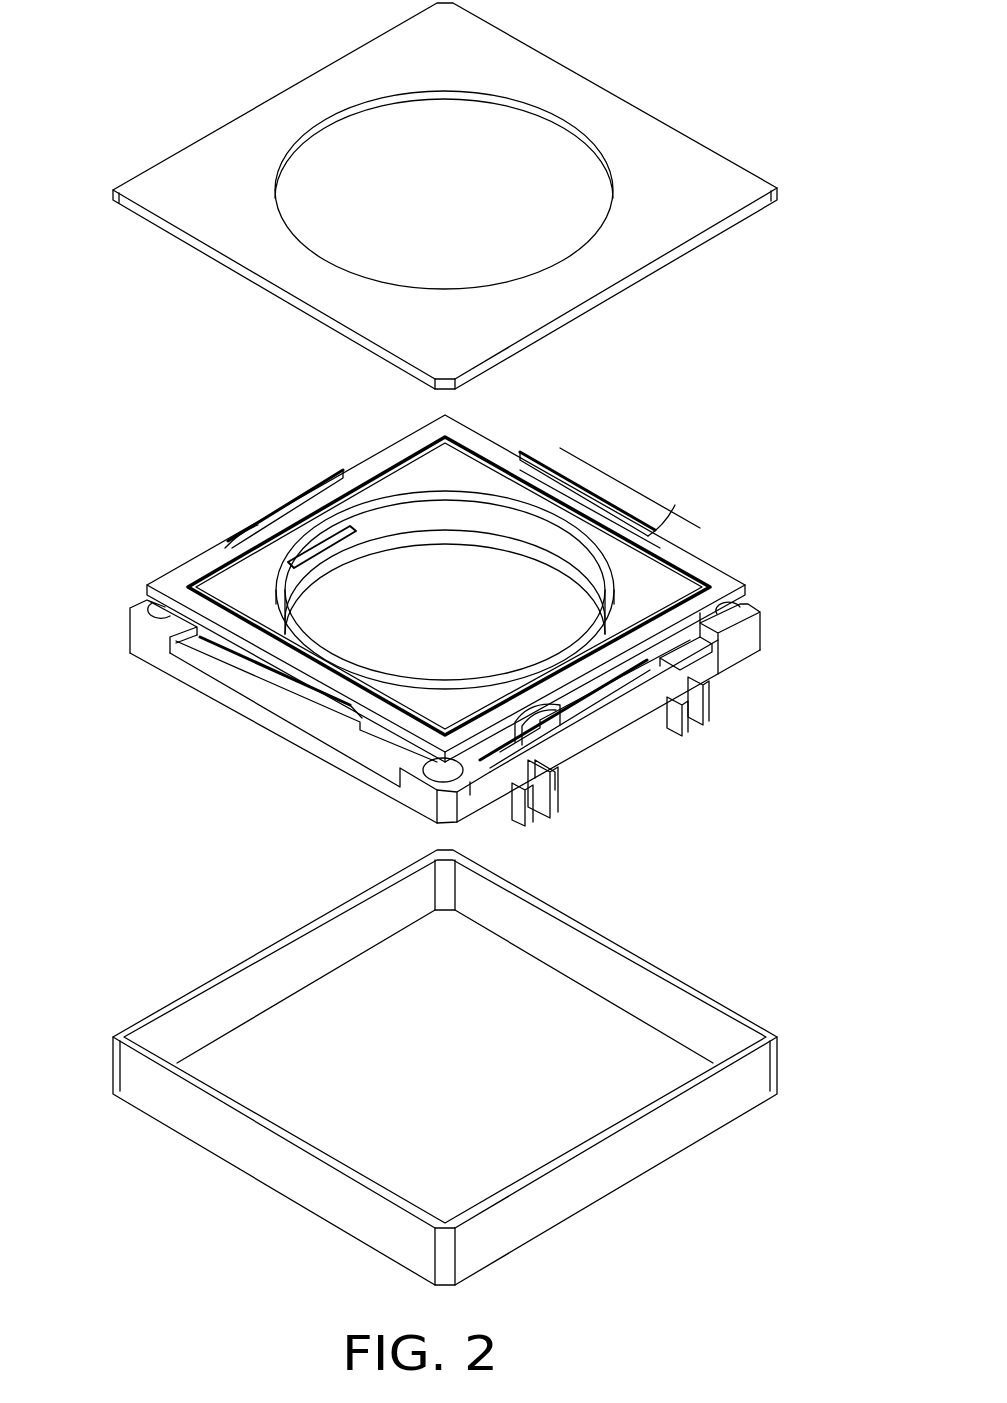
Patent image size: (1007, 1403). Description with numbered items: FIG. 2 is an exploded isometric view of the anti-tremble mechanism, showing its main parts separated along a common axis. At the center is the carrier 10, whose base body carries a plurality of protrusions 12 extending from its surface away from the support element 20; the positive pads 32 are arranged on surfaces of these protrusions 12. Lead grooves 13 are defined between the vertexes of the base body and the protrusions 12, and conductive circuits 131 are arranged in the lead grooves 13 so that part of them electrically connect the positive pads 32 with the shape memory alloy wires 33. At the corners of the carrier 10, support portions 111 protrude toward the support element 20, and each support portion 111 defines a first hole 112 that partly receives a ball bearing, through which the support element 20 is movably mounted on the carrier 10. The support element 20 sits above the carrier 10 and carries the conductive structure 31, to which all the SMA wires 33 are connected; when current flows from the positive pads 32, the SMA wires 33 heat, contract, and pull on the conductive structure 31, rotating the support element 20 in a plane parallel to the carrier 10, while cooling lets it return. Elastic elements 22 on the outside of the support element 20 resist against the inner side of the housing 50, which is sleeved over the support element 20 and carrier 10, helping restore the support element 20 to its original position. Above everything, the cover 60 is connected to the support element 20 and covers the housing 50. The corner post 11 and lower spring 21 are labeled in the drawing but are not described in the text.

The carrier 10 is at (252, 708).
The corner post of base 11 is at (415, 795).
The support portion 111 is at (148, 642).
The first hole 112 is at (150, 607).
The protrusion 12 is at (470, 797).
The lead groove 13 is at (540, 737).
The conductive circuit 131 is at (540, 777).
The support element 20 is at (215, 560).
The lower leaf spring 21 is at (433, 740).
The elastic element 22 is at (278, 497).
The conductive structure 31 is at (657, 560).
The positive pad 32 is at (537, 807).
The shape memory alloy wire 33 is at (550, 692).
The housing 50 is at (752, 1084).
The cover 60 is at (685, 148).